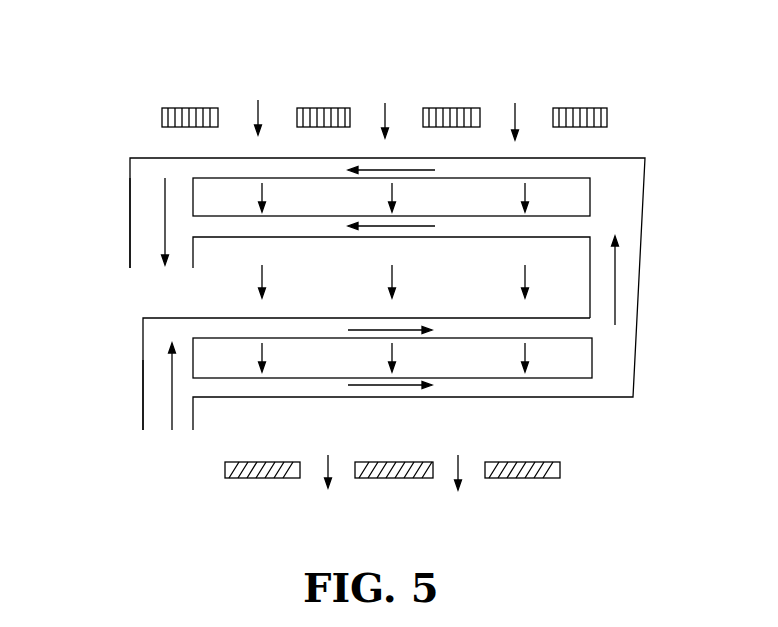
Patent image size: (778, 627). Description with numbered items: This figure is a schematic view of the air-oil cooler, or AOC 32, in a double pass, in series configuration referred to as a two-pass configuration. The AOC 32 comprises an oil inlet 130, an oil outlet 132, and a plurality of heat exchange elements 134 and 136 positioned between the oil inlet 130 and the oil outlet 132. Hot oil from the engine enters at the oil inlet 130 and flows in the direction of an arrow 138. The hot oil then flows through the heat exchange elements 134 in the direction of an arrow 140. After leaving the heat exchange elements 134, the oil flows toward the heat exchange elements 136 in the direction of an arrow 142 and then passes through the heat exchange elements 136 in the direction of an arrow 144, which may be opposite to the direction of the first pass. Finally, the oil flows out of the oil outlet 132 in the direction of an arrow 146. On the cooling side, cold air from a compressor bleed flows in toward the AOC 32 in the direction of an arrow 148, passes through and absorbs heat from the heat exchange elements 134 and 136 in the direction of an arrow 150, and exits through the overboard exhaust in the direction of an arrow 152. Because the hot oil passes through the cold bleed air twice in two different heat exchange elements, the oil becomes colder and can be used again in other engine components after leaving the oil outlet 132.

The air-oil cooler 32 is at (114, 136).
The oil inlet 130 is at (160, 418).
The oil outlet 132 is at (140, 250).
The heat exchange elements 134 is at (283, 318).
The heat exchange elements 136 is at (520, 238).
The arrow 138 is at (168, 388).
The arrow 140 is at (380, 385).
The arrow 142 is at (615, 275).
The arrow 144 is at (397, 226).
The arrow 146 is at (163, 212).
The arrow 148 is at (518, 118).
The arrow 150 is at (527, 194).
The arrow 152 is at (462, 466).